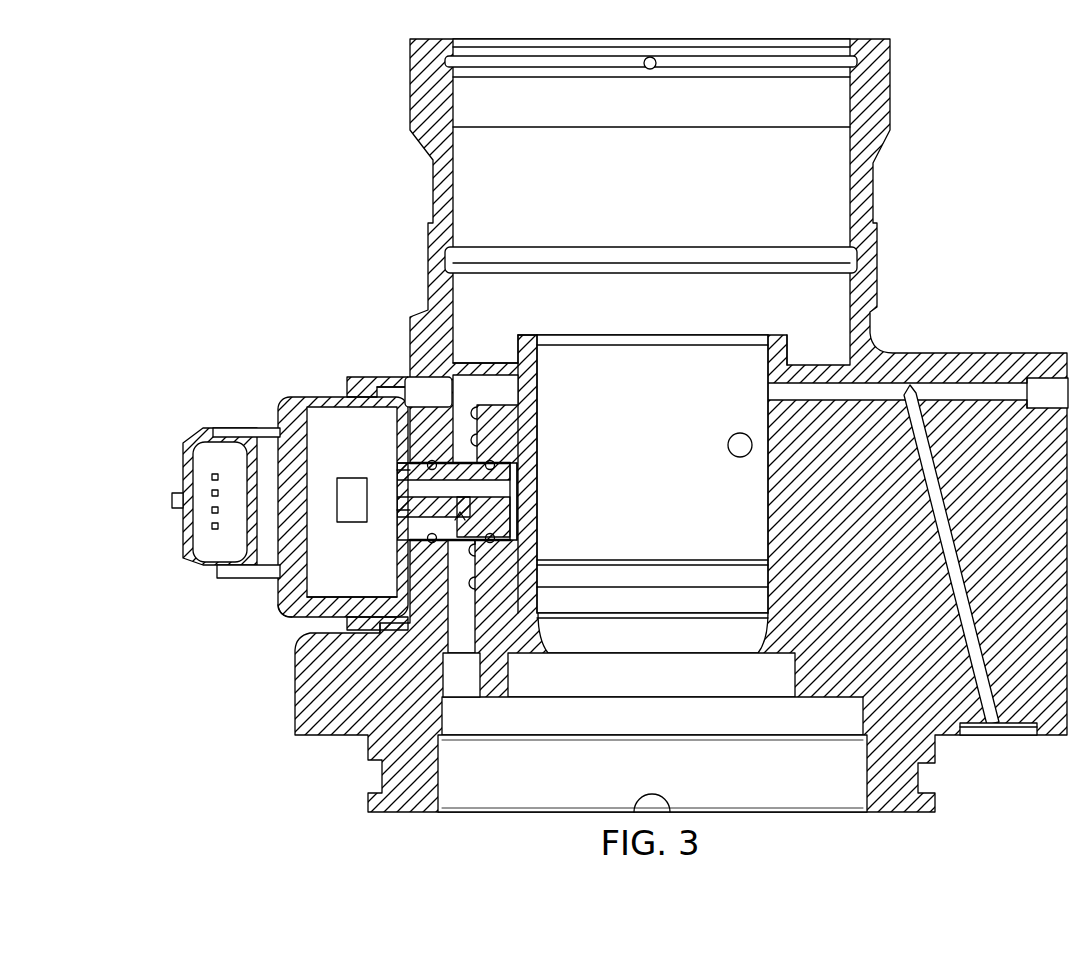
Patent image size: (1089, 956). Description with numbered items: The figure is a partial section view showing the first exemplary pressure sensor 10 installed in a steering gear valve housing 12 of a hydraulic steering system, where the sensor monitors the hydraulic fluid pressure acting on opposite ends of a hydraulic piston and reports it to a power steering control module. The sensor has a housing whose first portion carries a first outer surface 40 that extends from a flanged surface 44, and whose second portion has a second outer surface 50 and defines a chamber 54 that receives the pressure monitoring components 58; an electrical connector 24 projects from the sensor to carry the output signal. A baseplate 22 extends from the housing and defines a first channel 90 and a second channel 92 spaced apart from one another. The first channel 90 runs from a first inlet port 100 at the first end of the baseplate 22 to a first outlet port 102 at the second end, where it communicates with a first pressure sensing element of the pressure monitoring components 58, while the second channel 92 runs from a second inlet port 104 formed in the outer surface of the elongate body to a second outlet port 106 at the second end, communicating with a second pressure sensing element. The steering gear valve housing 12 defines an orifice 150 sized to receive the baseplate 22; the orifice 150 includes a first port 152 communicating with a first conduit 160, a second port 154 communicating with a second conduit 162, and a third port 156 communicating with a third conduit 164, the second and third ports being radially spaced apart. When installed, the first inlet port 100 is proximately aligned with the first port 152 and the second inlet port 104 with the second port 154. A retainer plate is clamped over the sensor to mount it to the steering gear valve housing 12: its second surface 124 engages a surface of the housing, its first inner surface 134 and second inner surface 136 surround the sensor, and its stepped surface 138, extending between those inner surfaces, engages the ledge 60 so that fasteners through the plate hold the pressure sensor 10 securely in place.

The first exemplary pressure sensor 10 is at (268, 372).
The steering gear valve housing 12 is at (884, 215).
The baseplate 22 is at (322, 492).
The electrical connector 24 is at (193, 434).
The chamber 54 is at (325, 412).
The stepped surface 138 is at (365, 385).
The second surface 124 is at (408, 392).
The ledge 60 is at (433, 372).
The flanged surface 44 is at (433, 392).
The third conduit 164 is at (528, 375).
The third port 156 is at (480, 410).
The orifice 150 is at (490, 438).
The first inlet port 100 is at (514, 470).
The first port 152 is at (512, 500).
The first conduit 160 is at (527, 512).
The second port 154 is at (477, 547).
The second conduit 162 is at (478, 582).
The first outlet port 102 is at (397, 482).
The first channel 90 is at (422, 495).
The second channel 92 is at (422, 527).
The pressure monitoring components 58 is at (343, 509).
The second outlet port 106 is at (397, 510).
The second inlet port 104 is at (456, 522).
The first outer surface 40 is at (380, 605).
The second outer surface 50 is at (322, 610).
The first inner surface 134 is at (350, 625).
The second inner surface 136 is at (378, 645).